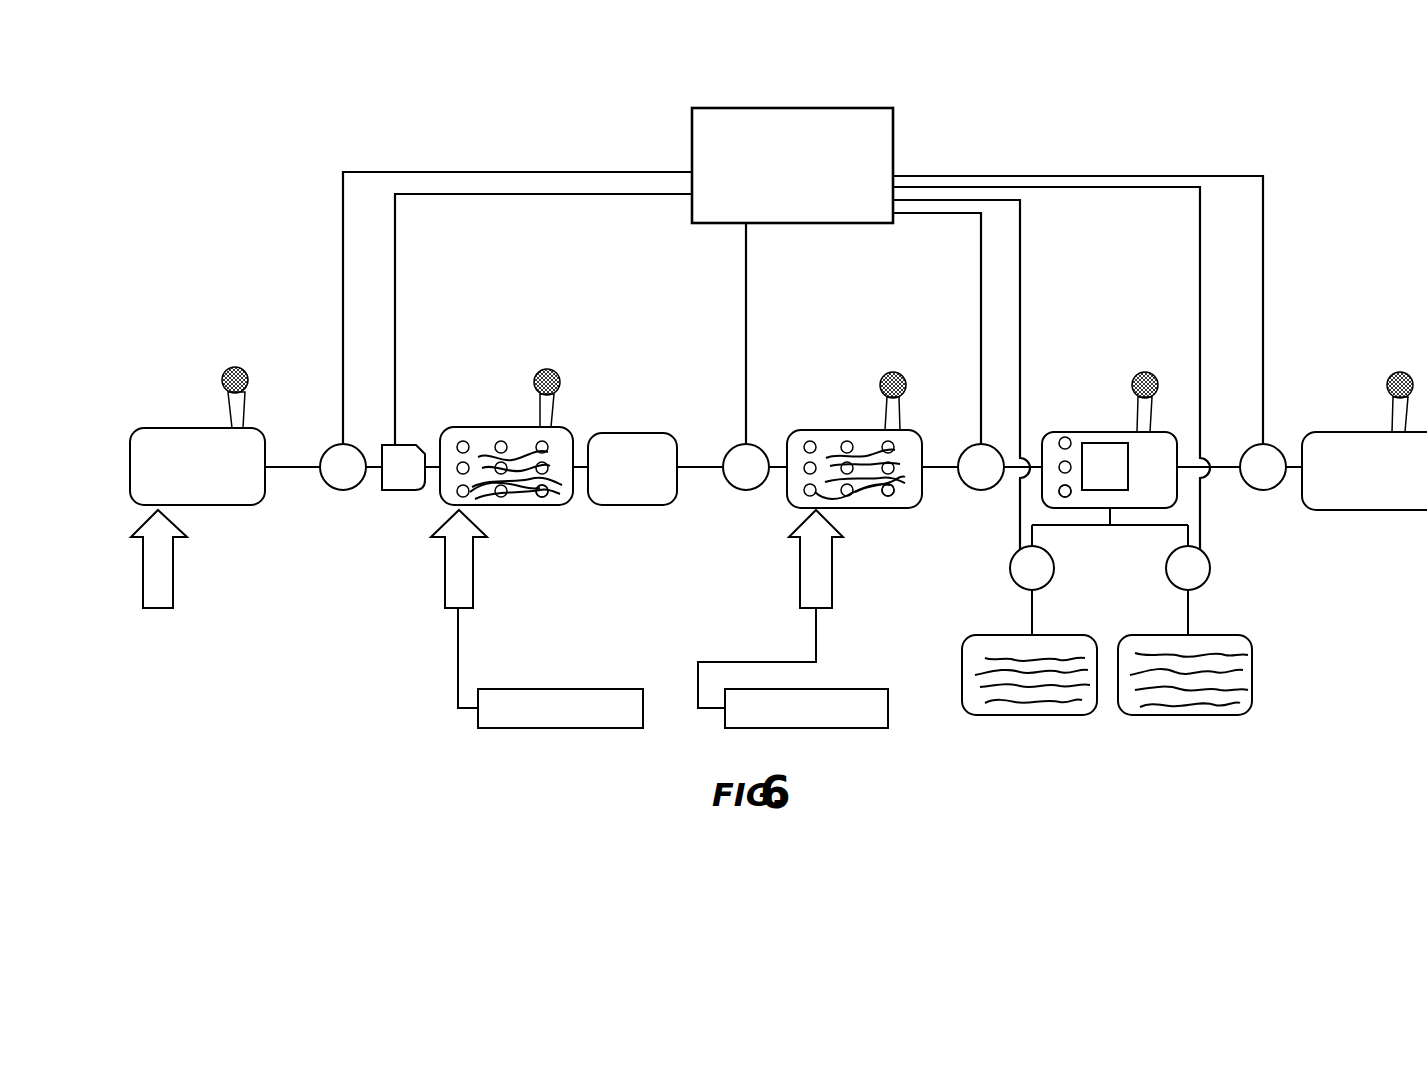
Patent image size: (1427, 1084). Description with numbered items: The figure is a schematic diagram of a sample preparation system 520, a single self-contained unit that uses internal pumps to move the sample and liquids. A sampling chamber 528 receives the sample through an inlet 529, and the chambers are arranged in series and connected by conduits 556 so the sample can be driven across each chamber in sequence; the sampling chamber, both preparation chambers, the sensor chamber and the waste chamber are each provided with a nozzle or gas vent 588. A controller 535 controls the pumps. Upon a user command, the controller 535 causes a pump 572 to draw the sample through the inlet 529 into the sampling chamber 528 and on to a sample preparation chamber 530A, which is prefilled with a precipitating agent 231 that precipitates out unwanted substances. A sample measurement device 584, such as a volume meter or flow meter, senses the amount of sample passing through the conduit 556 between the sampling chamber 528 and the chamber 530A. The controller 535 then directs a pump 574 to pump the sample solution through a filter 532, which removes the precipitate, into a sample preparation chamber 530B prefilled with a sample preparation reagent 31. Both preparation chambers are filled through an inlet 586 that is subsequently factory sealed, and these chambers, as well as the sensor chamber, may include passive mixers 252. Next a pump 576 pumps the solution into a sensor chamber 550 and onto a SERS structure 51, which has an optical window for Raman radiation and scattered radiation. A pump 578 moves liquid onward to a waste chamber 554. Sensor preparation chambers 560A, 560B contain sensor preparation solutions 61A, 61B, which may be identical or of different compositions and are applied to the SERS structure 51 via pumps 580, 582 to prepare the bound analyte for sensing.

The sample preparation system 520 is at (478, 117).
The controller 535 is at (893, 146).
The sampling chamber 528 is at (137, 428).
The inlet 529 is at (172, 572).
The conduits 556 is at (295, 470).
The gas vent 588 is at (248, 380).
The pump 572 is at (330, 448).
The sample measurement device 584 is at (400, 490).
The sample preparation chamber 530A is at (470, 427).
The precipitating agent 231 is at (516, 447).
The passive mixers 252 is at (544, 496).
The inlet 586 is at (447, 583).
The filter 532 is at (635, 505).
The pump 574 is at (737, 490).
The sample preparation chamber 530B is at (880, 508).
The sample preparation reagent 31 is at (862, 495).
The pump 576 is at (963, 448).
The sensor chamber 550 is at (1058, 432).
The SERS structure 51 is at (1100, 443).
The pump 578 is at (1244, 452).
The waste chamber 554 is at (1310, 432).
The pump 580 is at (1011, 575).
The pump 582 is at (1210, 557).
The sensor preparation chamber 560A is at (990, 635).
The sensor preparation chamber 560B is at (1253, 705).
The sensor preparation solution 61A is at (1002, 705).
The sensor preparation solution 61B is at (1210, 705).